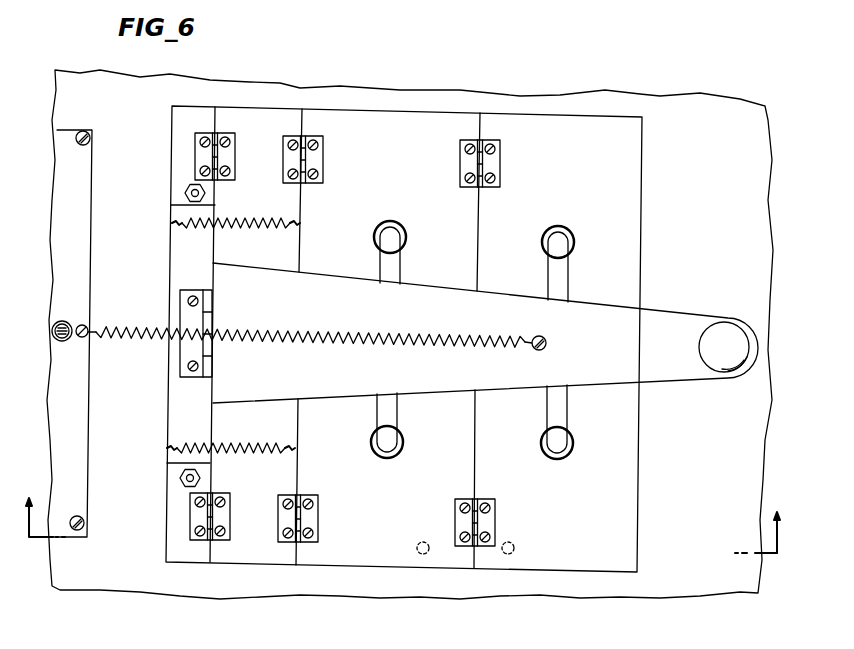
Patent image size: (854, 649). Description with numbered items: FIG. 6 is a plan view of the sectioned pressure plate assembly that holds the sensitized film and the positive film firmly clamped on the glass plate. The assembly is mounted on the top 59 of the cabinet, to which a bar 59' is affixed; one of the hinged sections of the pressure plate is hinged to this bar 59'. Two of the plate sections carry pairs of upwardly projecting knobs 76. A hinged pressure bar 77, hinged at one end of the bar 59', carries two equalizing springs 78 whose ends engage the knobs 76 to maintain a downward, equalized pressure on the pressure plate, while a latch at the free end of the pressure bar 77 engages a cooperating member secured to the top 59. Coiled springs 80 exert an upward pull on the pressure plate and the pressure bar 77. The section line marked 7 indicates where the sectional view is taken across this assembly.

The top of the cabinet 59 is at (410, 351).
The bar 59' is at (366, 339).
The upwardly projecting knobs 76 is at (566, 227).
The hinged pressure bar 77 is at (671, 317).
The equalizing springs 78 is at (388, 418).
The coiled springs 80 is at (424, 342).
The section line 7- 7 is at (407, 515).